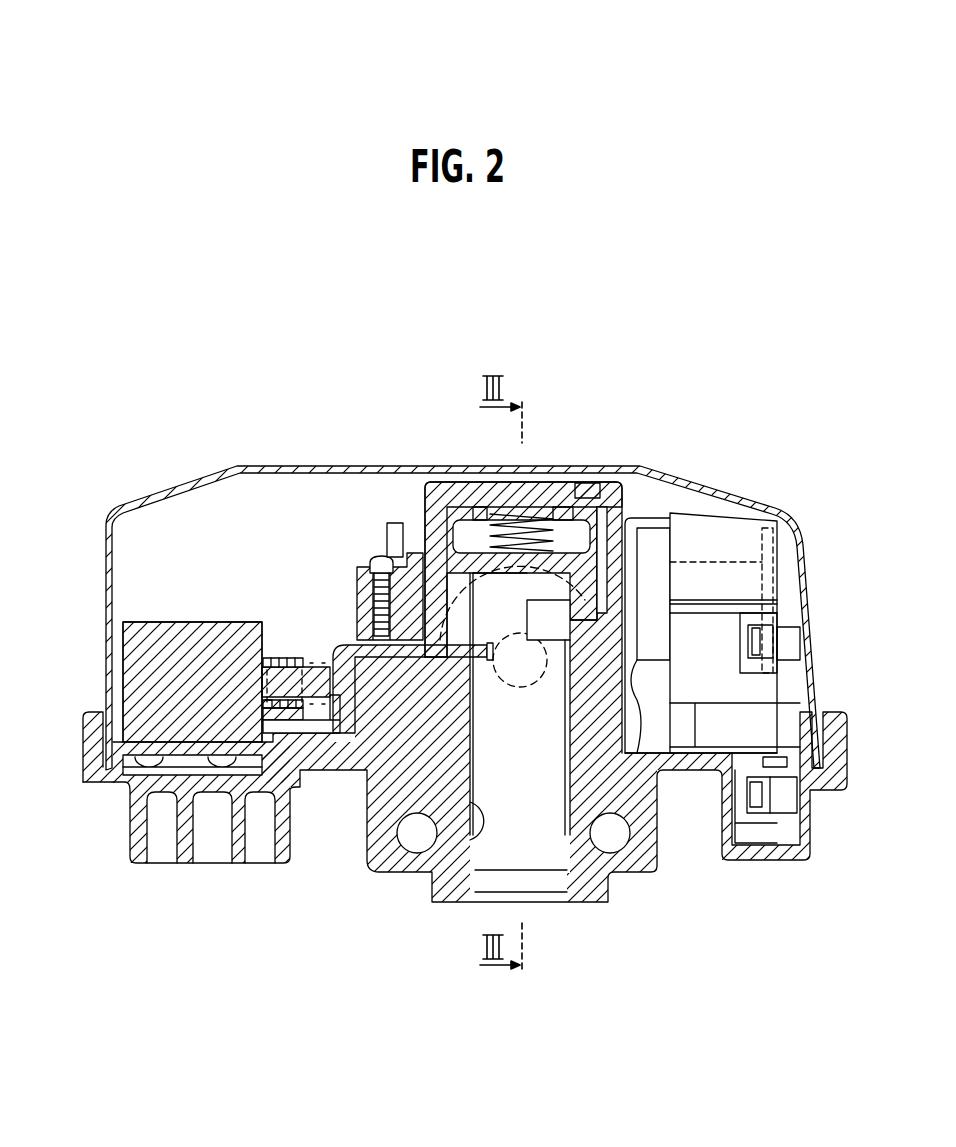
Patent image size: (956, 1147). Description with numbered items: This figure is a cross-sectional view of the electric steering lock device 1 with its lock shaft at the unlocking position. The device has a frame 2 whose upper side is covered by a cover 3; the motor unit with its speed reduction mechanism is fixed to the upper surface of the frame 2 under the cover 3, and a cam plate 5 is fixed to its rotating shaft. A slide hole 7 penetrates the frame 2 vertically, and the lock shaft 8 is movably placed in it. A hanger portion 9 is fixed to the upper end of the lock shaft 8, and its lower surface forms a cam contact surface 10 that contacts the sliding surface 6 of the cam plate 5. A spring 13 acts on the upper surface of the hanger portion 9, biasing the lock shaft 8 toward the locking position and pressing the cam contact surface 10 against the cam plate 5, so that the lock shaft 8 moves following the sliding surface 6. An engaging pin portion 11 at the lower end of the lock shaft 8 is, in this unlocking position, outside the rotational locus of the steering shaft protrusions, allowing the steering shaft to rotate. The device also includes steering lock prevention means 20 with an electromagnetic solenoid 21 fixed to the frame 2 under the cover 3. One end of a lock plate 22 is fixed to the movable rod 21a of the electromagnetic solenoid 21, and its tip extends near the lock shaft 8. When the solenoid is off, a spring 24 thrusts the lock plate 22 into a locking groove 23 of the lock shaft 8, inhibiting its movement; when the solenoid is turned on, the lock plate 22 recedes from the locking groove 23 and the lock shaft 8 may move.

The electric steering lock device 1 is at (137, 458).
The frame 2 is at (656, 808).
The cover 3 is at (731, 492).
The cam plate 5 is at (533, 680).
The sliding surface 6 is at (385, 545).
The slide hole 7 is at (457, 860).
The lock shaft 8 is at (573, 862).
The hanger portion 9 is at (460, 528).
The cam contact surface 10 is at (598, 488).
The engaging pin portion 11 is at (538, 884).
The spring 13 is at (563, 477).
The steering lock prevention means 20 is at (206, 623).
The electromagnetic solenoid 21 is at (135, 650).
The movable rod 21a is at (283, 656).
The lock plate 22 is at (341, 642).
The locking groove 23 is at (483, 680).
The spring 24 is at (310, 702).